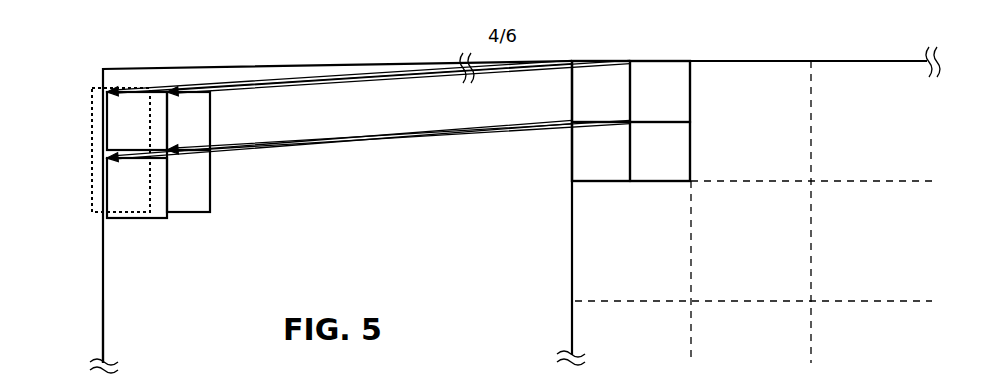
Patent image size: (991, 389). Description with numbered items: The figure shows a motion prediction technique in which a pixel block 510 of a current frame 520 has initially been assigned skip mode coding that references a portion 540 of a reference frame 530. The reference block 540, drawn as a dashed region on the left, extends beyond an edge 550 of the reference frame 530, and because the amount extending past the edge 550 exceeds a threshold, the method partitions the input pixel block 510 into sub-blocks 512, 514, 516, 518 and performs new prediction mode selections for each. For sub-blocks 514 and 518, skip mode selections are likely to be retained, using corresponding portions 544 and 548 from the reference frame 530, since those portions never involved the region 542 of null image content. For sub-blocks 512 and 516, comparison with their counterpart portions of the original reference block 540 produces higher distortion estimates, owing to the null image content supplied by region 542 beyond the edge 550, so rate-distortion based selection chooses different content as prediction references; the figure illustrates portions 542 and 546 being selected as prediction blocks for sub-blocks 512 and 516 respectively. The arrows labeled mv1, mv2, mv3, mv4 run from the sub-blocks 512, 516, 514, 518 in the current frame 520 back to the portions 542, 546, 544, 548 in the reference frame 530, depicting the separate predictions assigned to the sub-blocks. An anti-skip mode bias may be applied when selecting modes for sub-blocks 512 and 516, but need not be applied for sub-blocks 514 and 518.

The pixel block 510 is at (692, 91).
The sub-block 512 is at (601, 91).
The sub-block 514 is at (660, 91).
The sub-block 516 is at (601, 151).
The sub-block 518 is at (660, 151).
The current frame 520 is at (748, 199).
The reference frame 530 is at (331, 205).
The reference block 540 is at (84, 174).
The region of null image content 542 is at (97, 57).
The portion of reference frame 544 is at (188, 121).
The portion of reference frame 546 is at (137, 188).
The portion of reference frame 548 is at (188, 181).
The edge of reference frame 550 is at (106, 330).
The motion vector 1 mv1 is at (420, 69).
The motion vector 2 mv2 is at (421, 78).
The motion vector 3 mv3 is at (339, 142).
The motion vector 4 mv4 is at (340, 150).